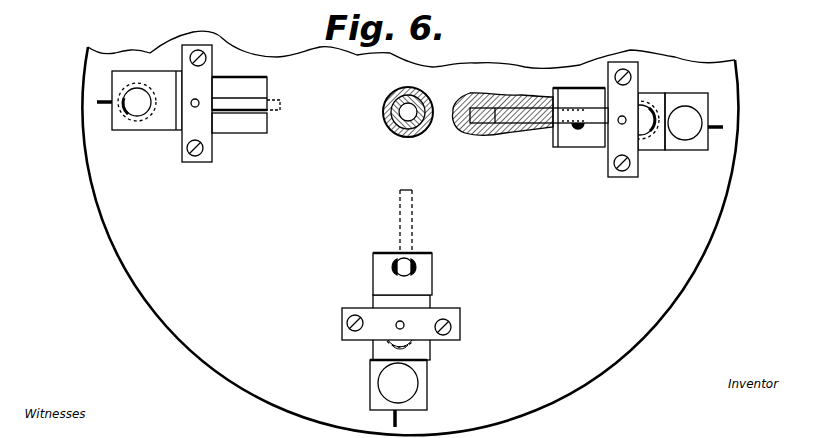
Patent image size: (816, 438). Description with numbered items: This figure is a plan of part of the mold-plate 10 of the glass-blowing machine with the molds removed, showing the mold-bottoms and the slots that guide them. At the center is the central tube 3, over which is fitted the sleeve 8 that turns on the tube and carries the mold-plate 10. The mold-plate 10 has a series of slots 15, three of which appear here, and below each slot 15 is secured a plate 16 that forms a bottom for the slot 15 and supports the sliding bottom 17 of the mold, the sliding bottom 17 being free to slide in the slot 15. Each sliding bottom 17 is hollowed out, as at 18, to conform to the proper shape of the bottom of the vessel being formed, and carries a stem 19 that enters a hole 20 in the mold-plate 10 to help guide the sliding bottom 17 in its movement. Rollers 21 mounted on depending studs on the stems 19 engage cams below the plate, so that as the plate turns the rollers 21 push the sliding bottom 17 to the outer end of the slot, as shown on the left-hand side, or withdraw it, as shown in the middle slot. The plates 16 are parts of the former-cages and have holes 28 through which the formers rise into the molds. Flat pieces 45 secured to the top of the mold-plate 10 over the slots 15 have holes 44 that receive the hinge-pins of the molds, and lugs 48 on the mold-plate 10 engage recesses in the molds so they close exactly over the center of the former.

The central tube 3 is at (393, 100).
The sleeve 8 is at (415, 133).
The mold-plate 10 is at (410, 233).
The slots 15 is at (255, 134).
The plate 16 is at (700, 146).
The sliding bottom 17 is at (160, 129).
The hollow 18 is at (133, 114).
The stem 19 is at (250, 105).
The holes 20 is at (483, 112).
The rollers 21 is at (572, 109).
The holes 28 is at (677, 146).
The holes 44 is at (199, 107).
The flat pieces 45 is at (199, 163).
The lugs 48 is at (97, 102).